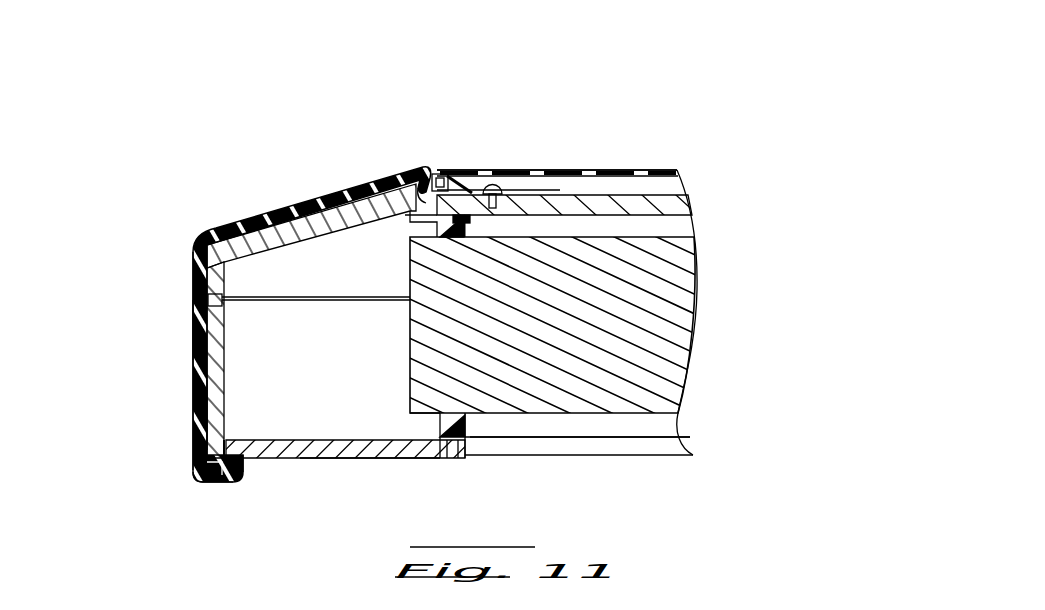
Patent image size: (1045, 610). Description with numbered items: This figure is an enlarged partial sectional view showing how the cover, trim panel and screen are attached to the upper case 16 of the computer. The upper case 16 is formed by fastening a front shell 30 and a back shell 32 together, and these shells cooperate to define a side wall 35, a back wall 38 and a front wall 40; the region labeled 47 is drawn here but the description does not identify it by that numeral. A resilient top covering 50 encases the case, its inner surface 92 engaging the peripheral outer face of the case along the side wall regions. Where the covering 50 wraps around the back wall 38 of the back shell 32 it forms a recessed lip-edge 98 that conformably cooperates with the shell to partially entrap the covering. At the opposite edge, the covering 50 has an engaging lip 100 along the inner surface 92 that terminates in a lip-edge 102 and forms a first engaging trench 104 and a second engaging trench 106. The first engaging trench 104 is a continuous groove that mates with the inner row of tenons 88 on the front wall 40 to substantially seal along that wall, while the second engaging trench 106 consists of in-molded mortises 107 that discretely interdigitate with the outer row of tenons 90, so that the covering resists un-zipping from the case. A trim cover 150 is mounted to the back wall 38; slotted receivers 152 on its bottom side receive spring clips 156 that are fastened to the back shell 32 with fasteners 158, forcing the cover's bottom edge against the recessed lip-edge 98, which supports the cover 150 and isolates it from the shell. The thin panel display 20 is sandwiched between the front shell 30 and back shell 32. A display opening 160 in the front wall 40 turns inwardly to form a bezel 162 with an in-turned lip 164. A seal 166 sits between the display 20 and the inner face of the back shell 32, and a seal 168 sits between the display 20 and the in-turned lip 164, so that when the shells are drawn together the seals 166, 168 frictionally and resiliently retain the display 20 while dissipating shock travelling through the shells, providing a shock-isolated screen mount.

The upper case 16 is at (168, 262).
The thin panel display 20 is at (588, 412).
The front shell 30 is at (377, 460).
The back shell 32 is at (287, 220).
The side wall 35 is at (192, 302).
The back wall 38 is at (577, 92).
The front wall 40 is at (363, 470).
The cover plate 47 is at (628, 167).
The top covering 50 is at (193, 330).
The inner row of tenons 88 is at (228, 460).
The outer row of tenons 90 is at (200, 460).
The inner surface 92 is at (228, 350).
The recessed lip-edge 98 is at (418, 185).
The engaging lip 100 is at (220, 497).
The lip-edge 102 is at (250, 467).
The first engaging trench 104 is at (232, 462).
The second engaging trench 106 is at (200, 437).
The in-molded mortise 107 is at (217, 480).
The trim cover 150 is at (578, 172).
The slotted receiver 152 is at (452, 178).
The spring clip 156 is at (473, 177).
The fastener 158 is at (492, 186).
The display opening 160 is at (612, 430).
The bezel 162 is at (476, 437).
The in-turned lip 164 is at (456, 432).
The seal 166 is at (437, 228).
The seal 168 is at (438, 422).